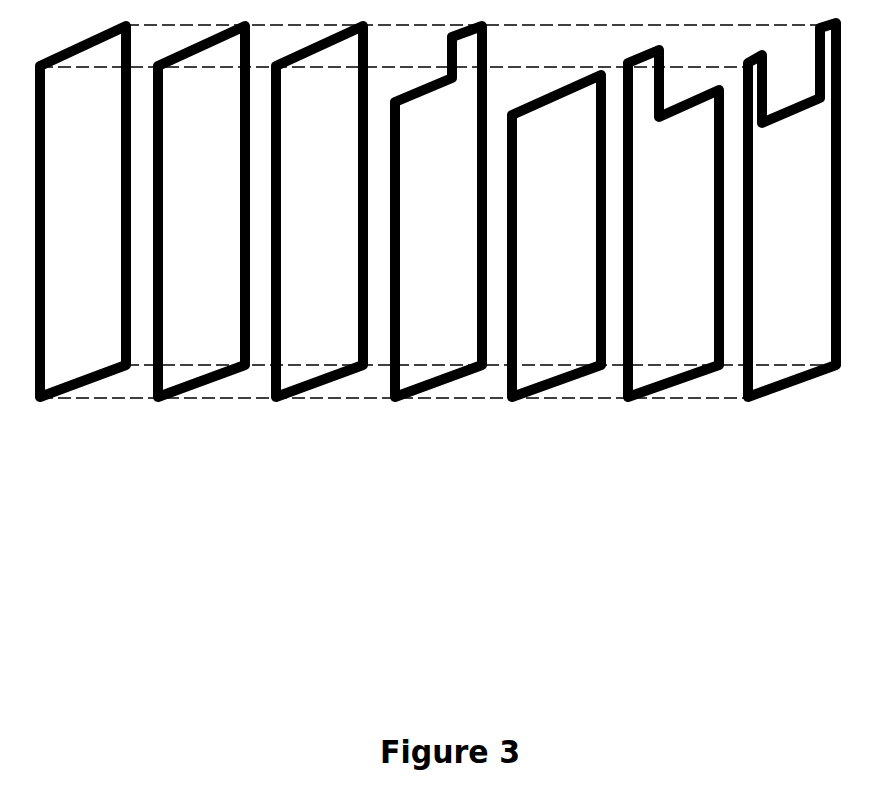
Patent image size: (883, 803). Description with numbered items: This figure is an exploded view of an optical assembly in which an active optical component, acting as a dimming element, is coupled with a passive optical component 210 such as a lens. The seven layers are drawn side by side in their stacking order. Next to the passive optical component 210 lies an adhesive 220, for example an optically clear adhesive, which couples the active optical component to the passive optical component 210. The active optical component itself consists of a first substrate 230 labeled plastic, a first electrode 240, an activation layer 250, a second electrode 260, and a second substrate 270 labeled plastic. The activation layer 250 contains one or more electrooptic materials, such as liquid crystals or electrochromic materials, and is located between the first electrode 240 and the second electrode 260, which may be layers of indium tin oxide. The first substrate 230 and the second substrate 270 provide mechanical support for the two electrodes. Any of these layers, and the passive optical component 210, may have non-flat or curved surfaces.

The passive optical component 210 is at (67, 348).
The adhesive 220 is at (198, 352).
The first substrate 230 is at (303, 352).
The first electrode 240 is at (437, 352).
The activation layer 250 is at (562, 357).
The second electrode 260 is at (672, 352).
The second substrate 270 is at (790, 352).